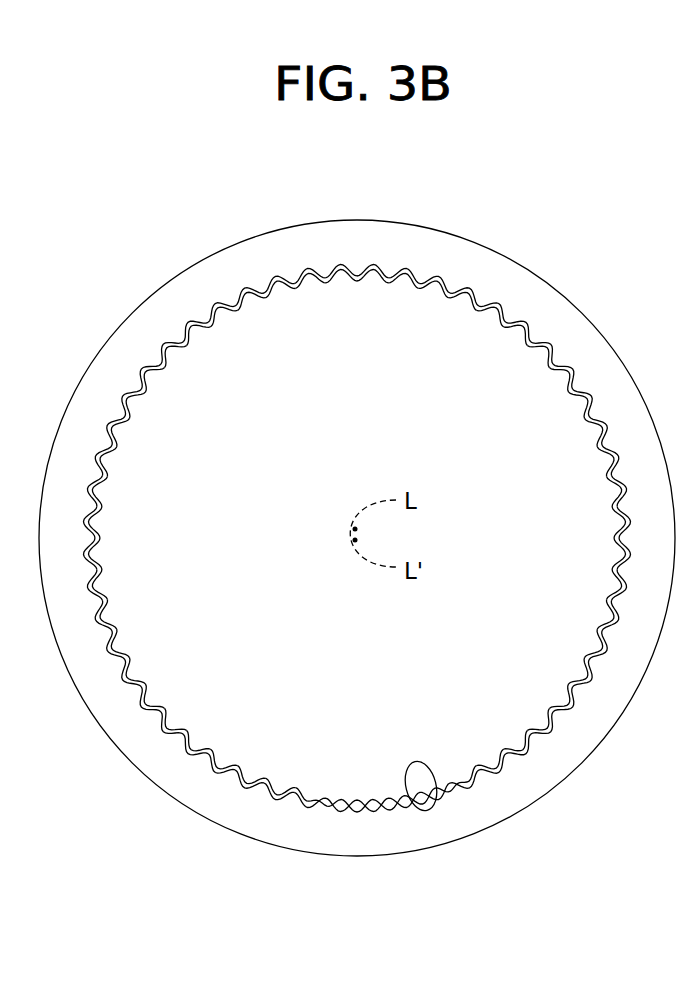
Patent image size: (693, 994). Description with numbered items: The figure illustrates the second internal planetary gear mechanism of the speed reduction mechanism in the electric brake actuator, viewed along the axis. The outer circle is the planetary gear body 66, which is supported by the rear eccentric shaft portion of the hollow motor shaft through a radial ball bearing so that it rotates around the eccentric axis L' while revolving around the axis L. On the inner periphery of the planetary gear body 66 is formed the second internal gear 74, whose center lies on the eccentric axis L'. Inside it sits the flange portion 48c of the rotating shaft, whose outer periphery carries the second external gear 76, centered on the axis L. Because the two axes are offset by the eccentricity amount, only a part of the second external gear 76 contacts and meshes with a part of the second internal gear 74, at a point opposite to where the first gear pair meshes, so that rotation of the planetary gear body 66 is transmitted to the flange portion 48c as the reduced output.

The planetary gear body 66 is at (474, 265).
The flange portion 48c is at (487, 356).
The second external gear 76 is at (372, 793).
The second internal gear 74 is at (438, 777).